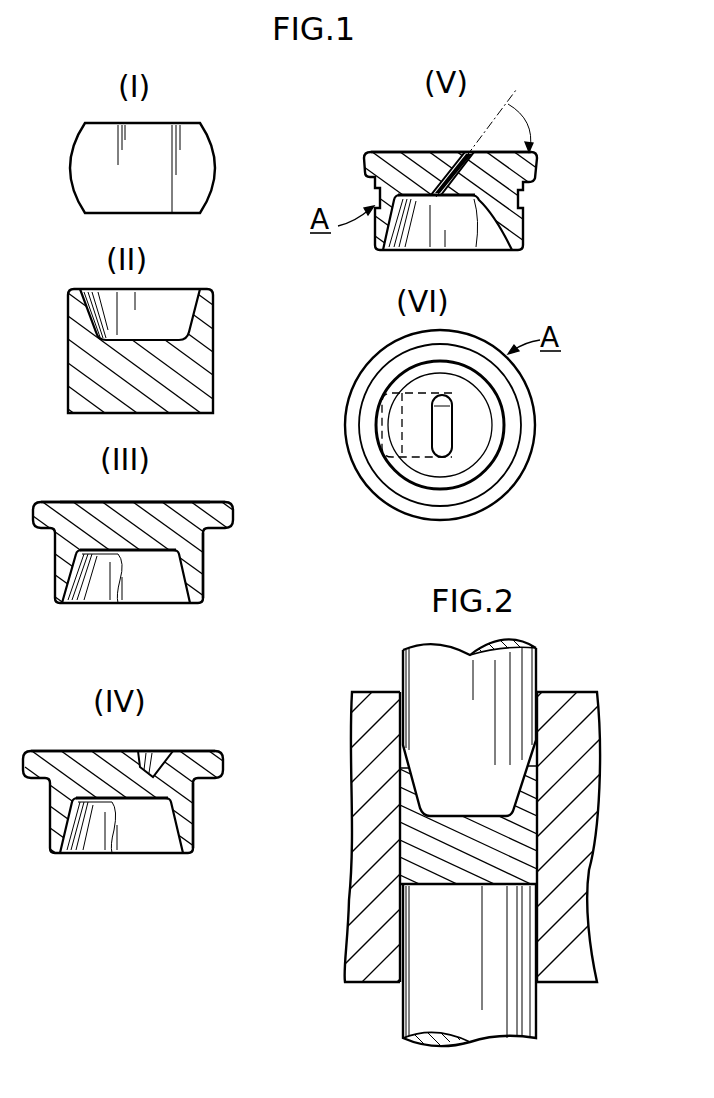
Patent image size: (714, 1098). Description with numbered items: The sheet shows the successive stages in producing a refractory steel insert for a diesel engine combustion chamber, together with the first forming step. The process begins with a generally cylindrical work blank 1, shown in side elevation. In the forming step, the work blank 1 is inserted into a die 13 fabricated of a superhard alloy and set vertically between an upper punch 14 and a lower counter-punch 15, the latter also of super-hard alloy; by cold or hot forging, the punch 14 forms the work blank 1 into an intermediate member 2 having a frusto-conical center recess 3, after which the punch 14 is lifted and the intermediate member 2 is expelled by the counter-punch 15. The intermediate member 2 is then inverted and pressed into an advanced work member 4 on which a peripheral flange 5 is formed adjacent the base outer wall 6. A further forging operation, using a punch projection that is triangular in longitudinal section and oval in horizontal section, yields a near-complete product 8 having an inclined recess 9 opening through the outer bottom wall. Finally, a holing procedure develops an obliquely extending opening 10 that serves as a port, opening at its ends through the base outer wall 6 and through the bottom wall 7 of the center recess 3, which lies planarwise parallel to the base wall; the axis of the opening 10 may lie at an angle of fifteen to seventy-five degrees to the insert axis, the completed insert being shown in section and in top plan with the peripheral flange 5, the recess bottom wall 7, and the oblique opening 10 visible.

In FIG. 1, the work blank 1 is at (216, 168).
In FIG. 1, the intermediate member 2 is at (214, 323).
In FIG. 2, the intermediate member 2 is at (515, 847).
In FIG. 1, the center recess 3 is at (173, 302).
In FIG. 1, the advanced work member 4 is at (153, 503).
In FIG. 1, the peripheral flange 5 is at (234, 516).
In FIG. 1, the base outer wall 6 is at (92, 502).
In FIG. 1, the bottom wall 7 is at (138, 553).
In FIG. 1, the near-complete product 8 is at (195, 812).
In FIG. 1, the inclined recess 9 is at (160, 752).
In FIG. 1, the obliquely extending opening 10 is at (465, 172).
In FIG. 2, the die 13 is at (580, 752).
In FIG. 2, the upper punch 14 is at (518, 674).
In FIG. 2, the lower counter-punch 15 is at (523, 1018).